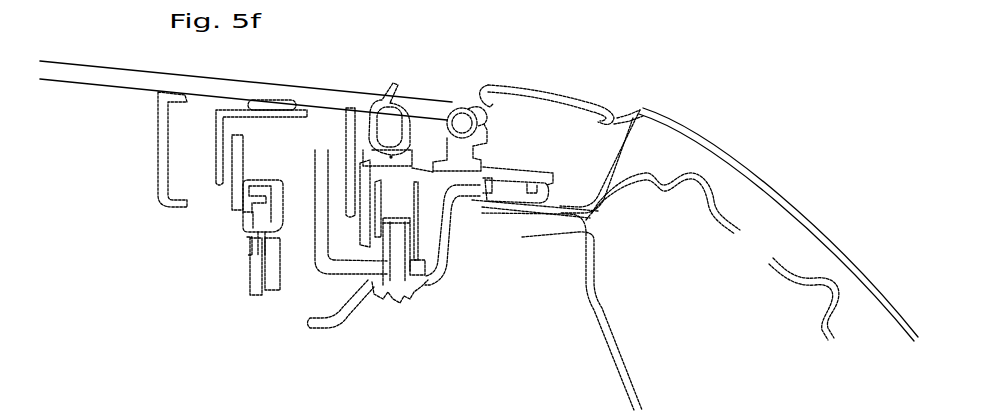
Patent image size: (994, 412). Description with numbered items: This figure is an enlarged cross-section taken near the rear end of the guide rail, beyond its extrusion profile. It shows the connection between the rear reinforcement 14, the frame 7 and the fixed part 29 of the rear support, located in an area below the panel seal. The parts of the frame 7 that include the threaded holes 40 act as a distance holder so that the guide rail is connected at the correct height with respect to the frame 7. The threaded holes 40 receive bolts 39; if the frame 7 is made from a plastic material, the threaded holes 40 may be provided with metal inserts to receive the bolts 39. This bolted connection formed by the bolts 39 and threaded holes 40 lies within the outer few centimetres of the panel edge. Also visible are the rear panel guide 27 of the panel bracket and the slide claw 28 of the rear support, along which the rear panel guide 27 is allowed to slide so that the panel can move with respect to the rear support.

The frame 7 is at (422, 174).
The rear reinforcement 14 is at (448, 266).
The rear panel guide 27 is at (254, 214).
The slide claw 28 is at (279, 201).
The fixed part 29 is at (336, 270).
The bolt 39 is at (394, 283).
The threaded hole 40 is at (398, 212).